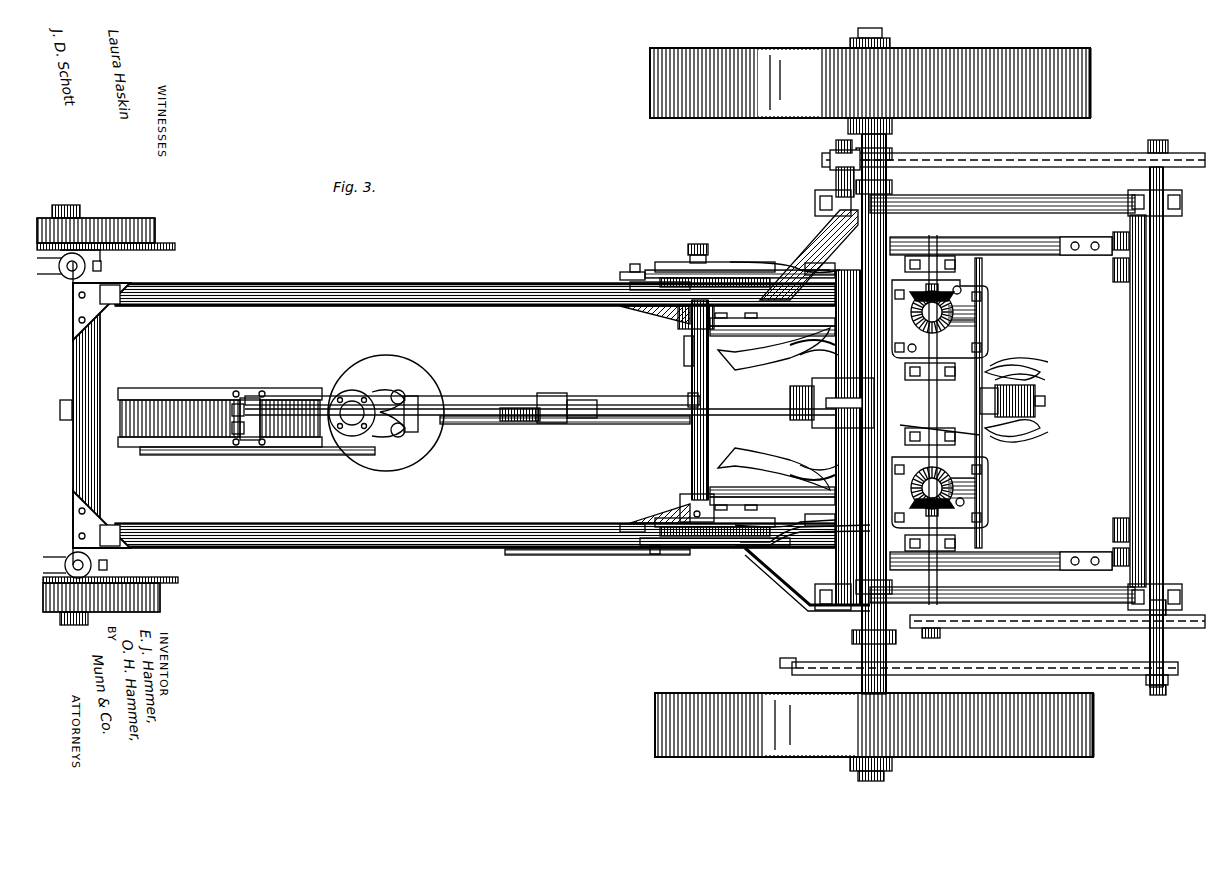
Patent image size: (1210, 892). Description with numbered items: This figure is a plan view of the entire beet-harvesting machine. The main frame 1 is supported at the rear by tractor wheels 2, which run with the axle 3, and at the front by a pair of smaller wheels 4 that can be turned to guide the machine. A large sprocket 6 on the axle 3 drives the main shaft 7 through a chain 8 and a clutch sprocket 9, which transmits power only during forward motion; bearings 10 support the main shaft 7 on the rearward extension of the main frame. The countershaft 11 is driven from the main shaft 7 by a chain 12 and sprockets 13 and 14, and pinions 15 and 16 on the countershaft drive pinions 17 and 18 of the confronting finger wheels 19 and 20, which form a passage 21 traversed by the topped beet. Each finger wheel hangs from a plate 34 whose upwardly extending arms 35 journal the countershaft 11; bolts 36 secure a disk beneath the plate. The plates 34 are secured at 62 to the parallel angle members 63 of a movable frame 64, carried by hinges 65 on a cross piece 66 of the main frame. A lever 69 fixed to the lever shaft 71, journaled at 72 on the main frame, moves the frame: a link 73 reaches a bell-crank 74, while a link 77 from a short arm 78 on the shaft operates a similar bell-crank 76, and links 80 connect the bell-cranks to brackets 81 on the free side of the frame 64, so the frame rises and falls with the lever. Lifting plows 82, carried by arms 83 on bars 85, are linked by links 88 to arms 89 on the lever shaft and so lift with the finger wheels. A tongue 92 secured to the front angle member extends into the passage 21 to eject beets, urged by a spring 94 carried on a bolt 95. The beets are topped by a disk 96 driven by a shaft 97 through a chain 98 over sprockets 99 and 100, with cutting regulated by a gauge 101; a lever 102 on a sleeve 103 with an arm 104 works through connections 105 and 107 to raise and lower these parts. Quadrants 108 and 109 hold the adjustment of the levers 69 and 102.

The main frame 1 is at (465, 285).
The tractor wheels 2 is at (727, 58).
The axle 3 is at (887, 634).
The smaller wheels 4 is at (155, 225).
The large sprocket 6 is at (785, 665).
The main shaft 7 is at (1170, 500).
The chain 8 is at (1104, 676).
The clutch sprocket 9 is at (1166, 688).
The bearings 10 is at (1165, 212).
The countershaft 11 is at (945, 578).
The chain 12 is at (1036, 628).
The sprocket 13 is at (940, 632).
The sprocket 14 is at (1182, 630).
The pinion 15 is at (955, 305).
The pinion 16 is at (962, 500).
The pinion 17 is at (985, 328).
The pinion 18 is at (965, 476).
The finger wheel 19 is at (1046, 378).
The finger wheel 20 is at (1040, 426).
The passage 21 is at (1042, 386).
The plate 34 is at (962, 338).
The upwardly extending arms 35 is at (940, 262).
The bolts 36 is at (962, 289).
The securing points 62 is at (984, 298).
The parallel angle members 63 is at (985, 436).
The movable frame 64 is at (1040, 250).
The hinges 65 is at (1113, 268).
The cross piece 66 is at (1132, 312).
The lever 69 is at (560, 556).
The lever shaft 71 is at (692, 452).
The journal 72 is at (640, 518).
The link 73 is at (782, 540).
The bell-crank 74 is at (782, 580).
The bell-crank 76 is at (790, 238).
The link 77 is at (740, 262).
The short arm 78 is at (672, 264).
The links 80 is at (866, 472).
The brackets 81 is at (845, 272).
The lifting plows 82 is at (745, 360).
The arms 83 is at (810, 360).
The bars 85 is at (793, 328).
The links 88 is at (745, 322).
The arms 89 is at (680, 312).
The tongue 92 is at (1015, 372).
The spring 94 is at (1030, 390).
The bolt 95 is at (1045, 402).
The disk 96 is at (404, 360).
The shaft 97 is at (836, 180).
The chain 98 is at (1055, 157).
The sprocket 99 is at (830, 152).
The sprocket 100 is at (1172, 150).
The gauge 101 is at (295, 398).
The lever 102 is at (660, 292).
The sleeve 103 is at (690, 362).
The arm 104 is at (690, 400).
The connection 105 is at (572, 425).
The connection 107 is at (462, 422).
The quadrant 108 is at (748, 547).
The quadrant 109 is at (708, 270).